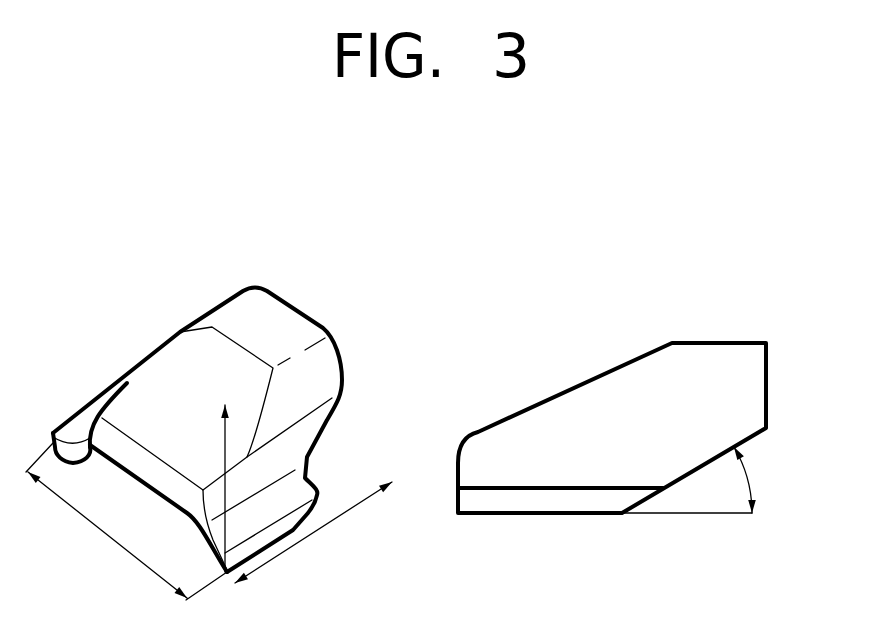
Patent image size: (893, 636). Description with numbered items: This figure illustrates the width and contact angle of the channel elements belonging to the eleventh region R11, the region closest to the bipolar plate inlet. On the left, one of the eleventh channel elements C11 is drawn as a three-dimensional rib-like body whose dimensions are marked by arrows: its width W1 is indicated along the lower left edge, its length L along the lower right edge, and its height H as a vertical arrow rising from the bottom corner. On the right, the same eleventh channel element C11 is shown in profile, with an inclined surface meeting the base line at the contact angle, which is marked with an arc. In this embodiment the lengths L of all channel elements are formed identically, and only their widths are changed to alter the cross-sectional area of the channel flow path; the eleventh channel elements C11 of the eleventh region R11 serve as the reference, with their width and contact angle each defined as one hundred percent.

The eleventh region R11 is at (197, 360).
The eleventh channel elements C11 is at (547, 381).
The height of rib H is at (209, 488).
The width of rib W1 is at (126, 521).
The length of the channel elements L is at (313, 532).